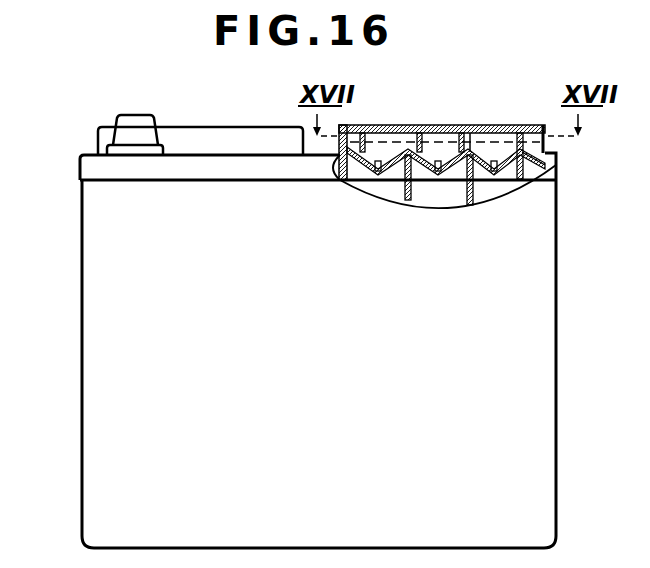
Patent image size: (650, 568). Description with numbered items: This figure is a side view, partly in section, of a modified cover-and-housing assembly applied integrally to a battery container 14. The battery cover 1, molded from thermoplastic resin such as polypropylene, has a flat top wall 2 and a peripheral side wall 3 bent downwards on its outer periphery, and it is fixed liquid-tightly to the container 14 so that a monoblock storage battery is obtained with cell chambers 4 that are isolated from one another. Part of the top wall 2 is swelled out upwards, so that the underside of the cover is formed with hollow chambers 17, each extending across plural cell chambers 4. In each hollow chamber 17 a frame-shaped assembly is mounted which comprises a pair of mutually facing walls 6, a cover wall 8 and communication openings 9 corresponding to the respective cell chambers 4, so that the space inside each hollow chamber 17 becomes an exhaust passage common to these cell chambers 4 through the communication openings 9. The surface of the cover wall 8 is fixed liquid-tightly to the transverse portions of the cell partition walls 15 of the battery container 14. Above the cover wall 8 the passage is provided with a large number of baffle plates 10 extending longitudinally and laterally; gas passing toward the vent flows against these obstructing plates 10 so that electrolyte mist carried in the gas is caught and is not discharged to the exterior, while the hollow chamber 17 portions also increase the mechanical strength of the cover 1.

The battery cover 1 is at (80, 165).
The top wall 2 is at (91, 154).
The peripheral side wall 3 is at (225, 170).
The cell chamber 4 is at (438, 193).
The facing wall 6 is at (506, 175).
The cover wall 8 is at (528, 172).
The communication opening 9 is at (380, 185).
The baffle plate 10 is at (442, 150).
The battery container 14 is at (80, 388).
The cell partition wall 15 is at (478, 195).
The hollow chamber 17 is at (216, 133).